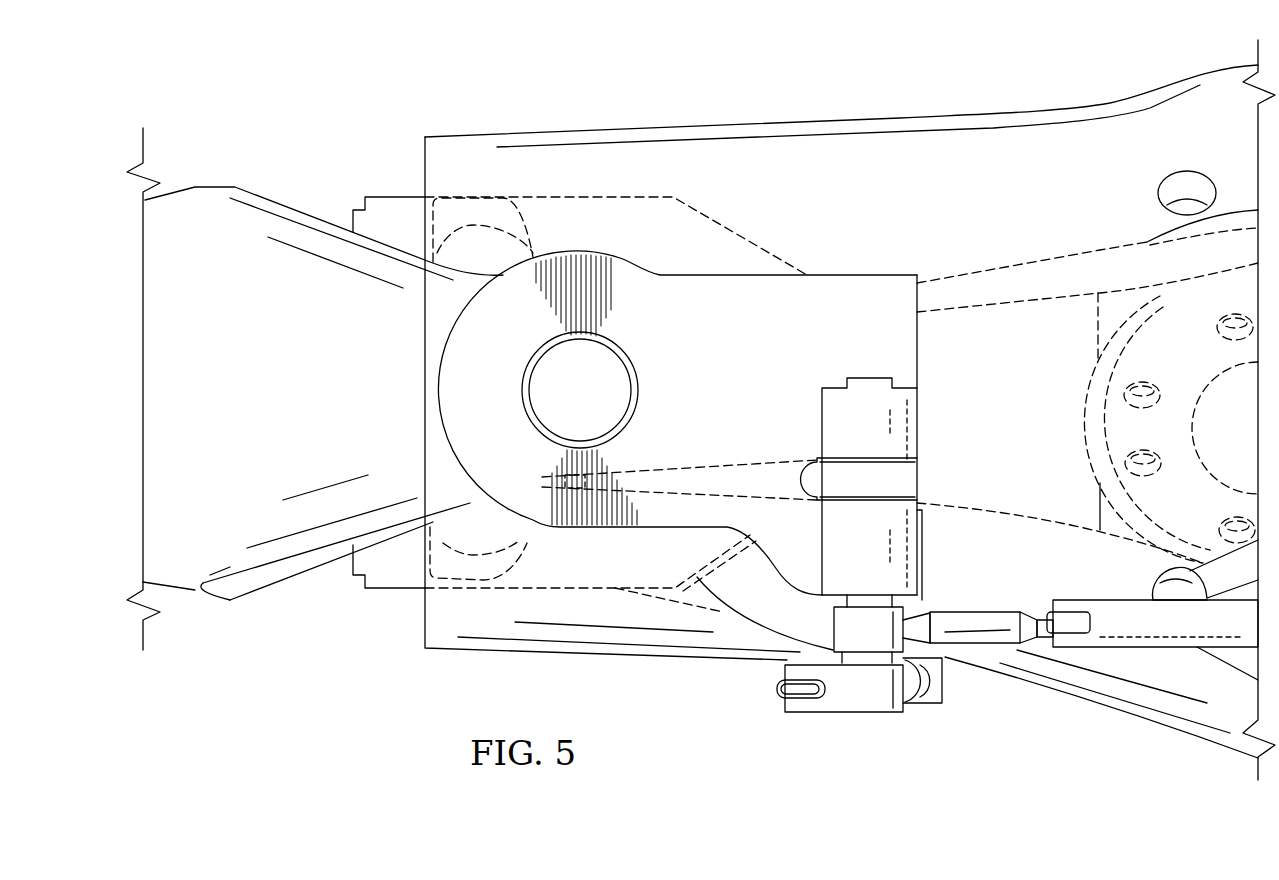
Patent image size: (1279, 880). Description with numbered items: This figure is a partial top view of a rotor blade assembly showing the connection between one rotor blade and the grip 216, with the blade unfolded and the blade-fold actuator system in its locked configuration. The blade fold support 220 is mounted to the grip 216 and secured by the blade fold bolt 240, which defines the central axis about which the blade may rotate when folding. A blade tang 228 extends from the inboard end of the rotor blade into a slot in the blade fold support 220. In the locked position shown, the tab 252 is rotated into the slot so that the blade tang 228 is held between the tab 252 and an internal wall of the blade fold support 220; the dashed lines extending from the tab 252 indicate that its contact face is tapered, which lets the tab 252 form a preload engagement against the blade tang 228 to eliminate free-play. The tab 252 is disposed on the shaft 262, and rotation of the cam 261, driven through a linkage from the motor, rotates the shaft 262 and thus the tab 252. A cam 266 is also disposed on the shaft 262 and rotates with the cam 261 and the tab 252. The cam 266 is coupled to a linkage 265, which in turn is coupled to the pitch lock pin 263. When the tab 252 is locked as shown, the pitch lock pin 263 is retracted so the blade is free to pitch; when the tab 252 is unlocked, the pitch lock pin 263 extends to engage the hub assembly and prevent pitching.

The grip 216 is at (735, 125).
The blade tang 228 is at (288, 207).
The blade fold support 220 is at (845, 275).
The blade fold bolt 240 is at (633, 365).
The shaft 262 is at (870, 378).
The tab 252 is at (918, 482).
The cam 266 is at (833, 623).
The cam 261 is at (840, 712).
The linkage 265 is at (977, 647).
The pitch lock pin 263 is at (1123, 648).